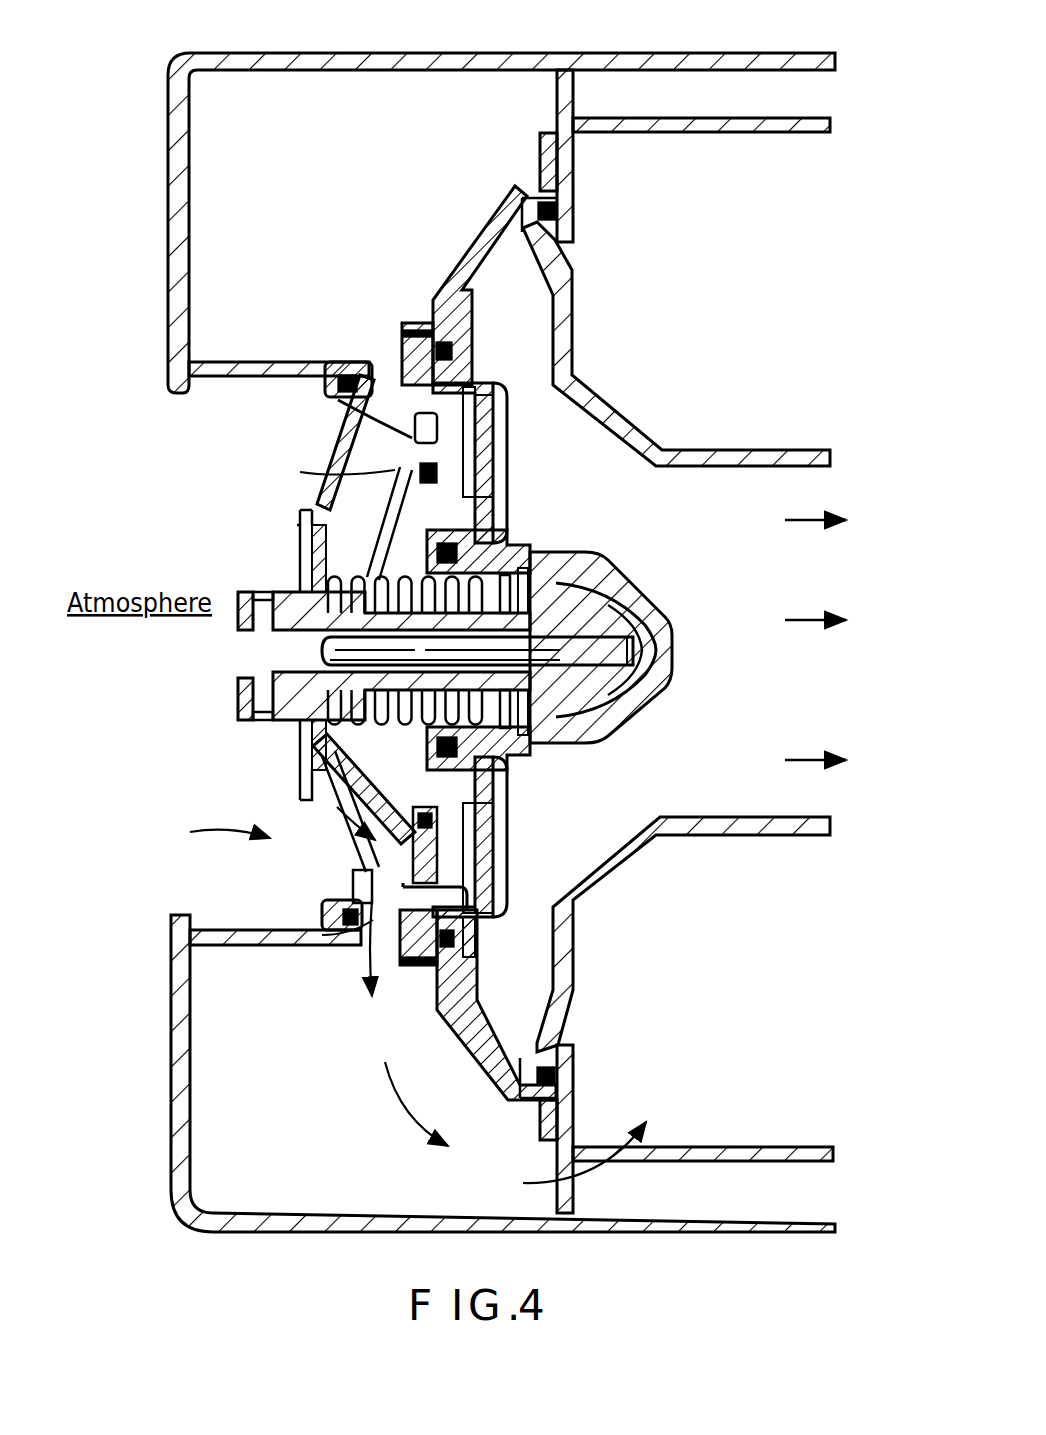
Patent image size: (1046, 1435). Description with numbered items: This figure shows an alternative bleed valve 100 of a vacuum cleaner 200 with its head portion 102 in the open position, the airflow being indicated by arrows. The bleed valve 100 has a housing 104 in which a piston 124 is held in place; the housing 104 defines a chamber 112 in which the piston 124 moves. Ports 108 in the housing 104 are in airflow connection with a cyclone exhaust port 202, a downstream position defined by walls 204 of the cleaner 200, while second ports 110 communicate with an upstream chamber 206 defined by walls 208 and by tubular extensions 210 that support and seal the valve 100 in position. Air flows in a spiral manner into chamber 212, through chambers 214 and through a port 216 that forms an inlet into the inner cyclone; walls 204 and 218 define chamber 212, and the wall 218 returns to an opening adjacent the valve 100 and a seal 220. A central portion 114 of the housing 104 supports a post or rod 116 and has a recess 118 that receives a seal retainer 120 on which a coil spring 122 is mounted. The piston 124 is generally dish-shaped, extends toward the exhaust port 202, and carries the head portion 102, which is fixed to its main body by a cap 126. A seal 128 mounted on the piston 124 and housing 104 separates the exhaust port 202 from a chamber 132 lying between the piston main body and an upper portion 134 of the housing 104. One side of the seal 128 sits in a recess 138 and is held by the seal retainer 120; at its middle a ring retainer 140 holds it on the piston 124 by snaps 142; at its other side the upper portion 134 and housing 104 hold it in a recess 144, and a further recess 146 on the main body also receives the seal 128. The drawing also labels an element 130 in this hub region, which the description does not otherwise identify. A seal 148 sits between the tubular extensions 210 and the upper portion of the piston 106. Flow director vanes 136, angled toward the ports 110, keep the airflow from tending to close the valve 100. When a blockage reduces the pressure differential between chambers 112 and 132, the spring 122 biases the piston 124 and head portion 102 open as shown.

The bleed valve 100 is at (152, 686).
The head portion 102 is at (298, 547).
The housing 104 is at (508, 508).
The piston 106 is at (232, 693).
The ports 108 is at (480, 422).
The second ports 110 is at (395, 360).
The chamber 112 is at (499, 400).
The central portion 114 is at (628, 692).
The post or rod 116 is at (640, 620).
The recess 118 is at (600, 580).
The seal retainer 120 is at (530, 565).
The coil spring 122 is at (592, 700).
The piston 124 is at (420, 649).
The cap 126 is at (240, 593).
The seal 128 is at (490, 350).
The bushing 130 is at (478, 960).
The chamber 132 is at (398, 440).
The upper portion 134 is at (330, 480).
The flow director vanes 136 is at (300, 519).
The recess 138 is at (508, 538).
The ring retainer 140 is at (500, 450).
The snaps 142 is at (378, 420).
The recess 144 is at (447, 290).
The recess 146 is at (413, 467).
The seal 148 is at (347, 374).
The cleaner 200 is at (640, 42).
The cyclone exhaust port 202 is at (790, 640).
The walls 204 is at (635, 440).
The upstream chamber 206 is at (312, 624).
The walls 208 is at (335, 55).
The tubular extensions 210 is at (240, 364).
The chamber 212 is at (714, 629).
The chambers 214 is at (685, 641).
The port 216 is at (520, 1217).
The wall 218 is at (750, 1148).
The seal 220 is at (560, 213).